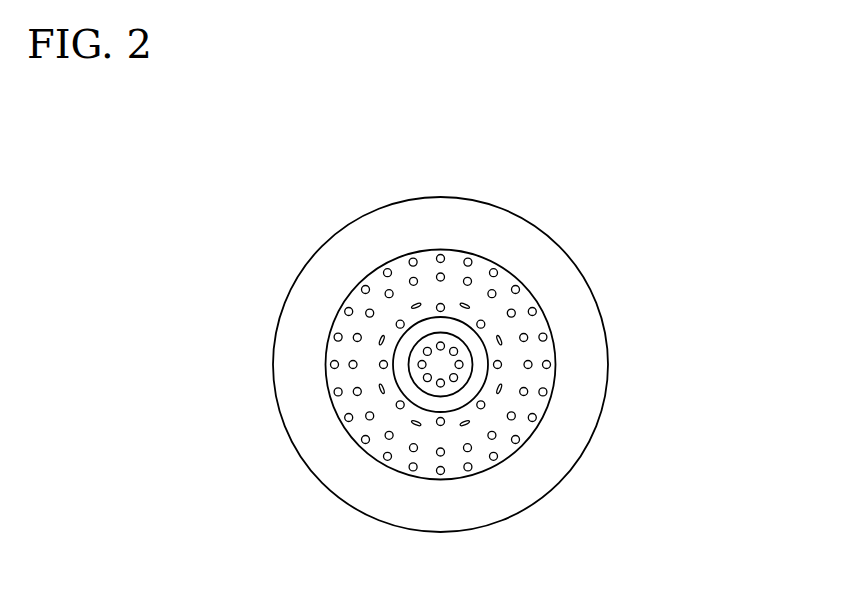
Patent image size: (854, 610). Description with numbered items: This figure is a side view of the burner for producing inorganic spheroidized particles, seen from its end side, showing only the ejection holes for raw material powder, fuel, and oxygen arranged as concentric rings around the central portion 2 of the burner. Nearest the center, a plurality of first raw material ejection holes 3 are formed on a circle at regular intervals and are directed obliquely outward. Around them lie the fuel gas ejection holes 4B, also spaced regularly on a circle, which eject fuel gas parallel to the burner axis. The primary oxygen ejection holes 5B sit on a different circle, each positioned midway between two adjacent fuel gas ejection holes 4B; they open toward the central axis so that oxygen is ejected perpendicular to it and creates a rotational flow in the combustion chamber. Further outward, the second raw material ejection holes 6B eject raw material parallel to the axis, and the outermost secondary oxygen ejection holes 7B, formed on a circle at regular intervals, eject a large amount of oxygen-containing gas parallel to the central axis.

The central tube 2 is at (440, 366).
The first raw material ejection hole 3 is at (427, 378).
The fuel gas ejection hole 4B is at (484, 325).
The primary oxygen ejection hole 5B is at (414, 305).
The second raw material ejection hole 6B is at (493, 436).
The secondary oxygen ejection hole 7B is at (334, 392).